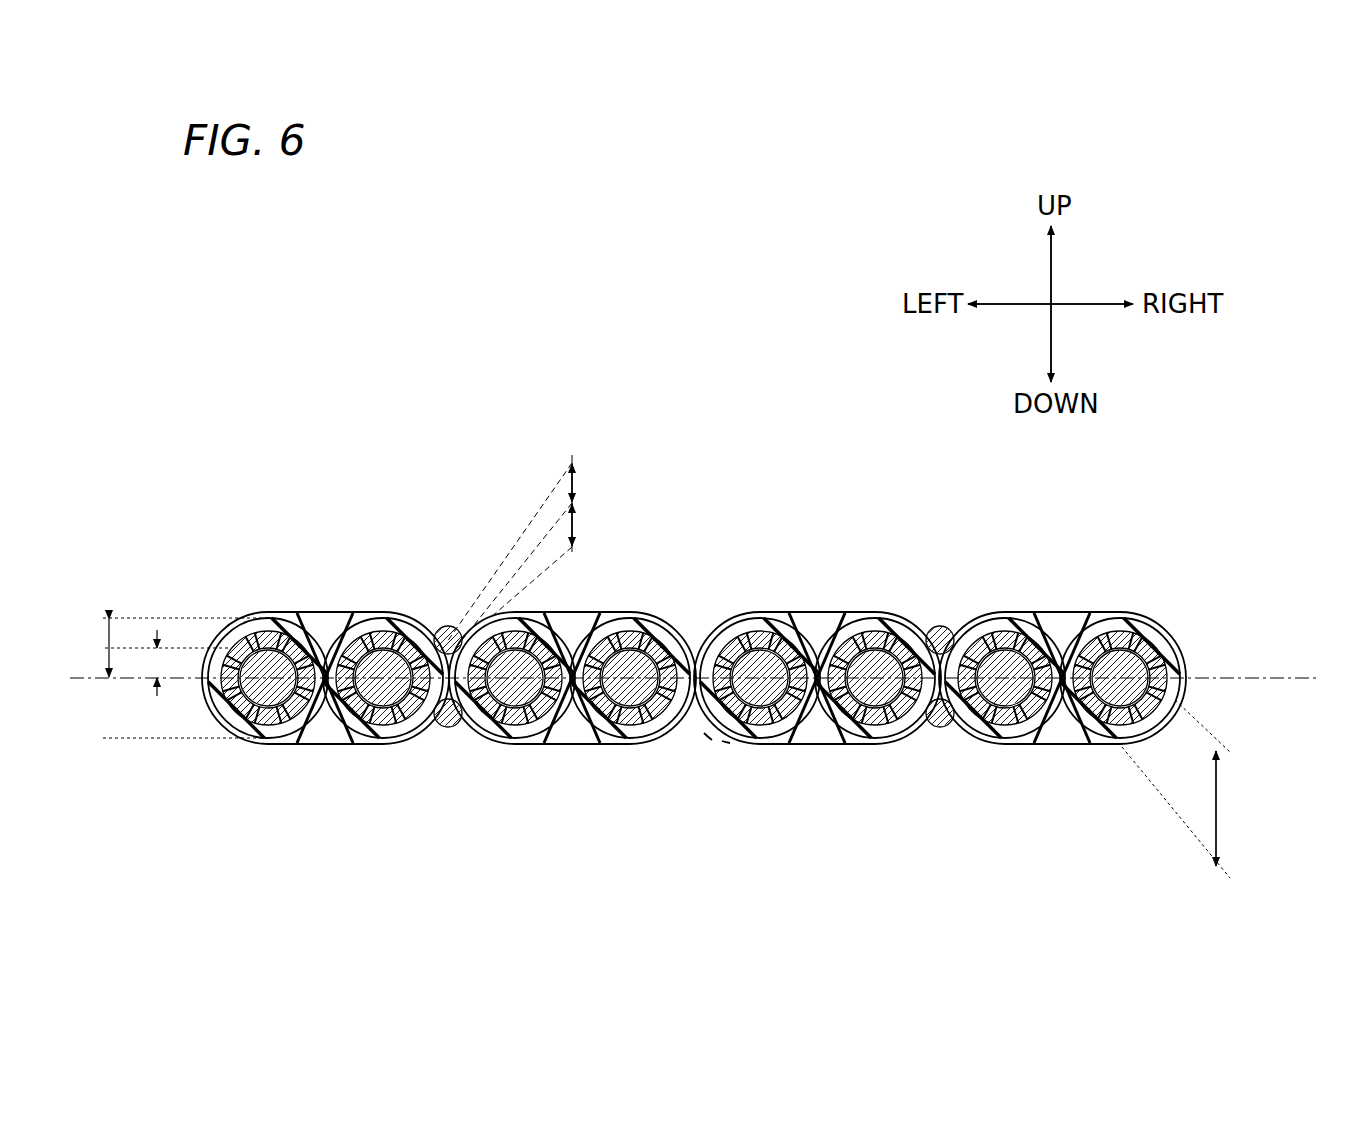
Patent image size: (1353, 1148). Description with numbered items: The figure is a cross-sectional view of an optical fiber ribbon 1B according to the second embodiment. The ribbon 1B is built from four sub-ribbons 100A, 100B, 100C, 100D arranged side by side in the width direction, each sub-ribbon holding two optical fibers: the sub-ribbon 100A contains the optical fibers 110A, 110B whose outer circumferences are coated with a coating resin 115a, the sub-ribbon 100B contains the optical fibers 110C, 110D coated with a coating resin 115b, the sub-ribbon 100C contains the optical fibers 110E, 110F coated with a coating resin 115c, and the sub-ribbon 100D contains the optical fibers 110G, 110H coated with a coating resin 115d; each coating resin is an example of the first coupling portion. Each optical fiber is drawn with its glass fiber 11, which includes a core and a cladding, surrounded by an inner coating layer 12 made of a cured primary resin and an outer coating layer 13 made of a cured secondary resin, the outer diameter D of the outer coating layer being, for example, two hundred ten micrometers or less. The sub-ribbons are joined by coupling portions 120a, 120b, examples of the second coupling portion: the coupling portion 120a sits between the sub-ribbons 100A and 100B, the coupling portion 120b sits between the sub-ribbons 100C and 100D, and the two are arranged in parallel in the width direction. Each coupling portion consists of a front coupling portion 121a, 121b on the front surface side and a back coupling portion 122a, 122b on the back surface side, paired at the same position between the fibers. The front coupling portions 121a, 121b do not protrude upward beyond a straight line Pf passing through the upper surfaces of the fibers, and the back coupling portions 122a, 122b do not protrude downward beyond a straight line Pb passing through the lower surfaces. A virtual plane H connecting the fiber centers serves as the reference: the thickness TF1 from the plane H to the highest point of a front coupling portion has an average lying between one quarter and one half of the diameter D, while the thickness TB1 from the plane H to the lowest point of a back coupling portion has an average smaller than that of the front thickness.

The optical fiber ribbon 1B is at (759, 390).
The sub-ribbon 100A is at (325, 673).
The sub-ribbon 100B is at (589, 661).
The sub-ribbon 100C is at (814, 673).
The sub-ribbon 100D is at (1062, 672).
The optical fiber 110A is at (256, 613).
The optical fiber 110B is at (375, 612).
The optical fiber 110C is at (492, 613).
The optical fiber 110D is at (672, 623).
The optical fiber 110E is at (733, 612).
The optical fiber 110F is at (860, 626).
The optical fiber 110G is at (1022, 611).
The optical fiber 110H is at (1131, 611).
The coating resin 115a is at (320, 745).
The coating resin 115b is at (568, 745).
The coating resin 115c is at (813, 745).
The coating resin 115d is at (1060, 745).
The coupling portion 120a is at (439, 665).
The coupling portion 120b is at (931, 667).
The front coupling portion 121a is at (438, 624).
The front coupling portion 121b is at (930, 624).
The back coupling portion 122a is at (442, 735).
The back coupling portion 122b is at (937, 735).
The glass fiber 11 is at (720, 738).
The inner coating layer 12 is at (738, 743).
The outer coating layer 13 is at (773, 742).
The virtual plane H is at (1275, 677).
The straight line Pf is at (152, 618).
The straight line Pb is at (146, 738).
The outer diameter D is at (1178, 789).
The front coupling portion thickness TF1 is at (534, 548).
The back coupling portion thickness TB1 is at (557, 561).